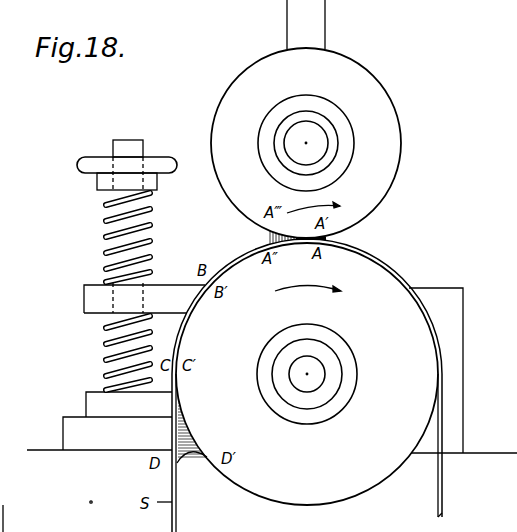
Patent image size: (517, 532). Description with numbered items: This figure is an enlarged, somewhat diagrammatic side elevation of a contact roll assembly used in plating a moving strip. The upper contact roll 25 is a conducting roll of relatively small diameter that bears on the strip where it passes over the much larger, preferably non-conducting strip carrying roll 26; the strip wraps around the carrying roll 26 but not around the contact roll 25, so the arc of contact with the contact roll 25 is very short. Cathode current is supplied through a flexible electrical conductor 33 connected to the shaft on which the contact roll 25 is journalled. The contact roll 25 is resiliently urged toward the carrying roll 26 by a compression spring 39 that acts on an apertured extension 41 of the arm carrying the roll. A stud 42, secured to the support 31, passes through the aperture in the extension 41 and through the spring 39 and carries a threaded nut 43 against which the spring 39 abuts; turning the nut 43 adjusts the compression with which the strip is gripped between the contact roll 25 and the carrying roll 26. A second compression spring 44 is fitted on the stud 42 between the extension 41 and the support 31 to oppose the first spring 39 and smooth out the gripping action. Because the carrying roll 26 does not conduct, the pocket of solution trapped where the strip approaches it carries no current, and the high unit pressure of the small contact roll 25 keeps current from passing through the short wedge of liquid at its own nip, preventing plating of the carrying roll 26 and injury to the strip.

The contact roll 25 is at (388, 150).
The strip carrying roll 26 is at (286, 492).
The support 31 is at (102, 400).
The electrical conductor 33 is at (3, 517).
The compression spring 39 is at (115, 221).
The extension 41 is at (100, 293).
The stud 42 is at (137, 243).
The nut 43 is at (107, 165).
The second compression spring 44 is at (107, 343).